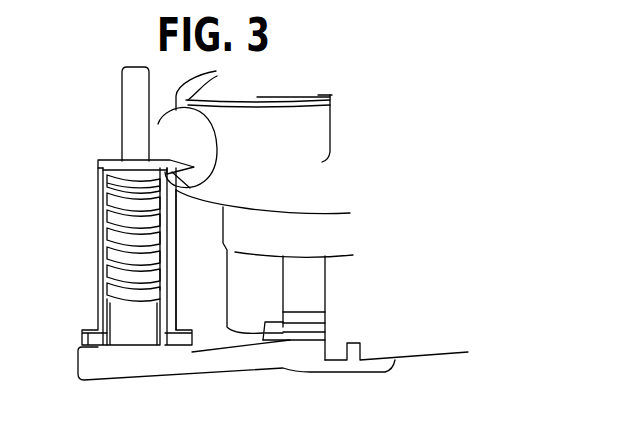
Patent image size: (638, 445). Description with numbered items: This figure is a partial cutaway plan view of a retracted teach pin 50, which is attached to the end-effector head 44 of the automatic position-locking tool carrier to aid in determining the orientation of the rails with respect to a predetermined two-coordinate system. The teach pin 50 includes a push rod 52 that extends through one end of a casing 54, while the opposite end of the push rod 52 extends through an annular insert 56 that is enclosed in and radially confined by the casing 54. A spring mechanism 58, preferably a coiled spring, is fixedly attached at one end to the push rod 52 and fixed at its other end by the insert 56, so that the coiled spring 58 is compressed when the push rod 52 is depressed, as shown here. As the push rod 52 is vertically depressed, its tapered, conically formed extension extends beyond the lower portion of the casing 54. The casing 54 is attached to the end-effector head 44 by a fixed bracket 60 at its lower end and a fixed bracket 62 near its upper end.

The end-effector head 44 is at (322, 162).
The teach pin 50 is at (597, 307).
The push rod 52 is at (122, 109).
The casing 54 is at (97, 285).
The annular insert 56 is at (137, 344).
The spring mechanism 58 is at (107, 211).
The fixed bracket 60 is at (77, 349).
The fixed bracket 62 is at (192, 150).